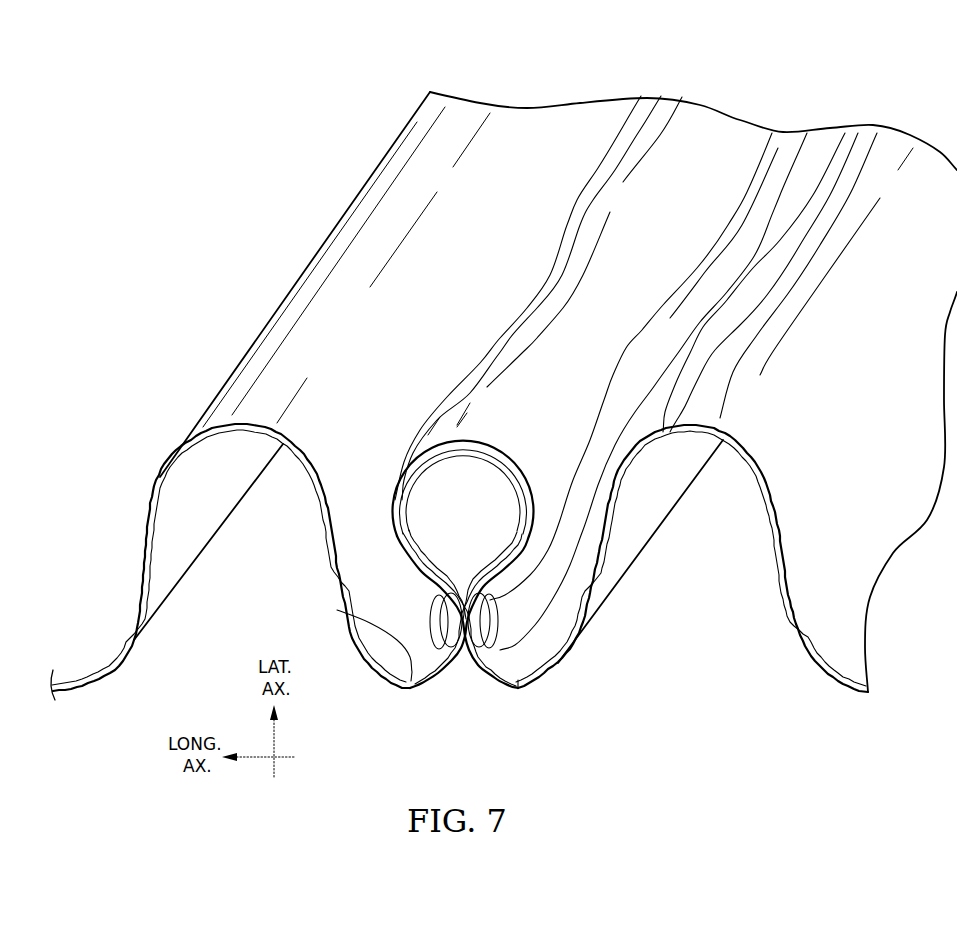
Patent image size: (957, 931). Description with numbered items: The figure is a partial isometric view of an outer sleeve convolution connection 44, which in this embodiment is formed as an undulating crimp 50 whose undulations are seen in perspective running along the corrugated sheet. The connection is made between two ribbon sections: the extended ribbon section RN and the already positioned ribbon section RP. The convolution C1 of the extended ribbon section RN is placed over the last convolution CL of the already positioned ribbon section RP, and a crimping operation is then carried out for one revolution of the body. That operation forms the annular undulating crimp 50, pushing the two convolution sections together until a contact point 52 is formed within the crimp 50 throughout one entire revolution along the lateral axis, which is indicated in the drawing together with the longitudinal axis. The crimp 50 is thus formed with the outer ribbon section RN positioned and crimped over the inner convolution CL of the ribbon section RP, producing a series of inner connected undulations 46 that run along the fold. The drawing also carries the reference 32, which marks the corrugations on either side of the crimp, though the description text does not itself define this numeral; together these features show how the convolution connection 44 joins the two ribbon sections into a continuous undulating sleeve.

The outer convolution connection 44 is at (552, 80).
The inner connected undulations 46 is at (693, 338).
The undulating crimp 50 is at (380, 414).
The contact point 52 is at (463, 620).
The corrugation 32 is at (137, 612).
The extended ribbon section RN is at (158, 481).
The already positioned ribbon section RP is at (750, 450).
The last convolution CL is at (467, 663).
The convolution of the extended ribbon section C1 is at (507, 451).